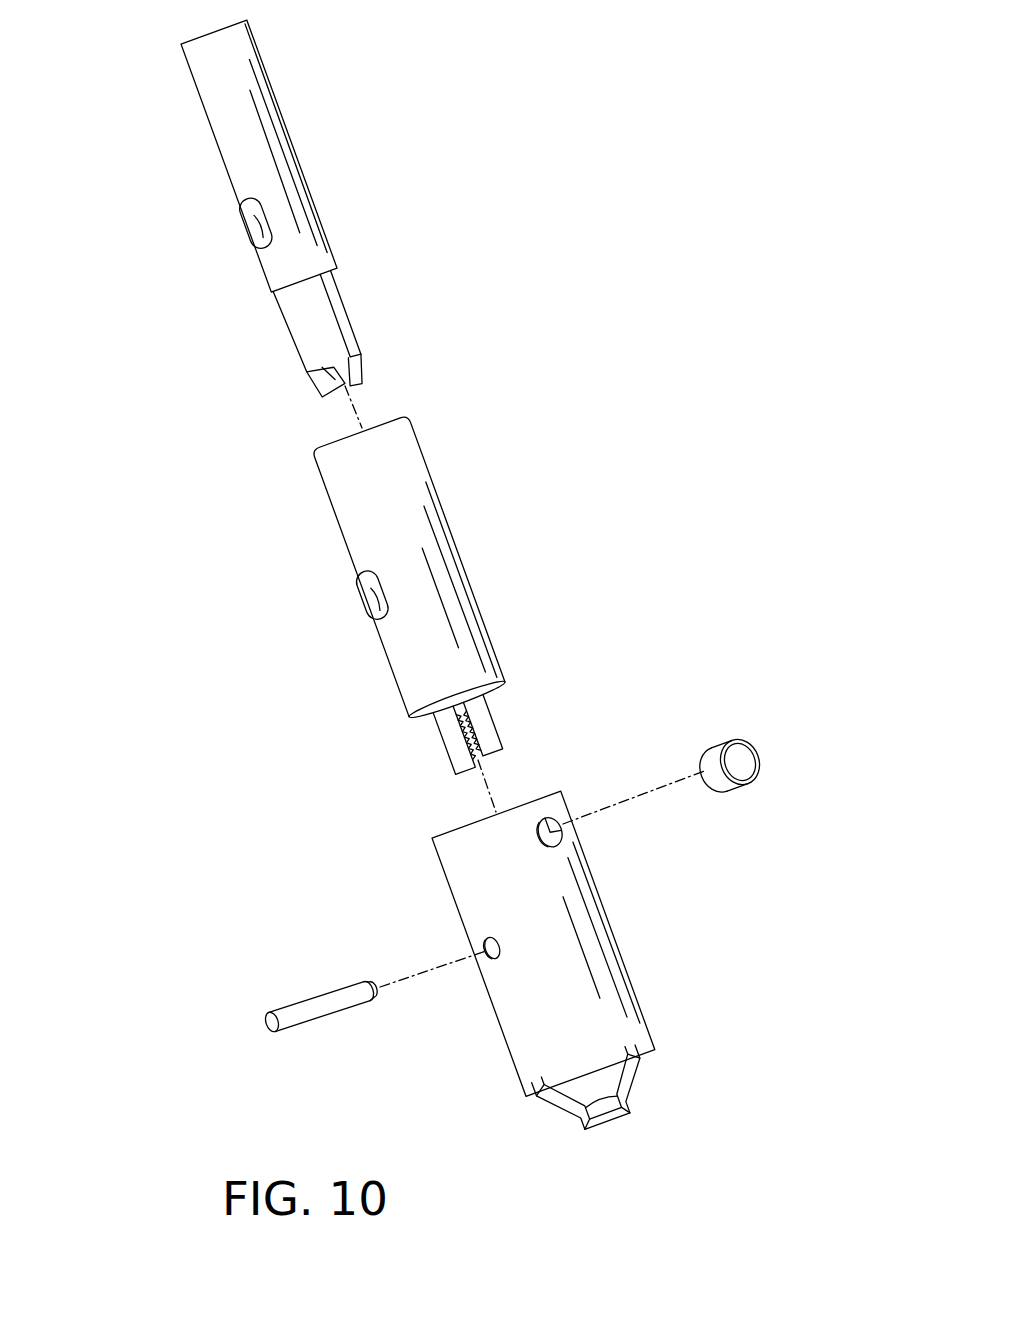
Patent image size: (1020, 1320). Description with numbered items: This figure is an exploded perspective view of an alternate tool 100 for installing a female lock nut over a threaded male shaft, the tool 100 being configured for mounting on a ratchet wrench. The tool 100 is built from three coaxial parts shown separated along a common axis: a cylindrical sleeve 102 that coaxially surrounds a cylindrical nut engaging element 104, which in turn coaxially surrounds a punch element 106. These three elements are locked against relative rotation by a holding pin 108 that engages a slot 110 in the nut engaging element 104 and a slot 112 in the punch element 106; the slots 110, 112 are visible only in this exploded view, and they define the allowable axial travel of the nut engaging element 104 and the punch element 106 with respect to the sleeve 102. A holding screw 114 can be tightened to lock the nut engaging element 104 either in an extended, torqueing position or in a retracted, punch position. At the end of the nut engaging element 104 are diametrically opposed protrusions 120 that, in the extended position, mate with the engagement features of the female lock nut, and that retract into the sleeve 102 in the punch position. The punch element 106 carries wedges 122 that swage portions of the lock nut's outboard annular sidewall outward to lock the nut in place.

The tool 100 is at (198, 713).
The cylindrical sleeve 102 is at (556, 810).
The cylindrical nut engaging element 104 is at (403, 472).
The punch element 106 is at (272, 180).
The holding pin 108 is at (330, 997).
The slot 110 is at (372, 612).
The slot 112 is at (254, 226).
The holding screw 114 is at (763, 737).
The protrusions 120 is at (478, 752).
The wedges 122 is at (347, 383).